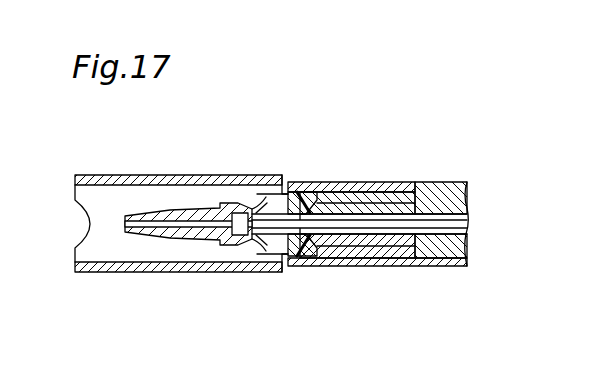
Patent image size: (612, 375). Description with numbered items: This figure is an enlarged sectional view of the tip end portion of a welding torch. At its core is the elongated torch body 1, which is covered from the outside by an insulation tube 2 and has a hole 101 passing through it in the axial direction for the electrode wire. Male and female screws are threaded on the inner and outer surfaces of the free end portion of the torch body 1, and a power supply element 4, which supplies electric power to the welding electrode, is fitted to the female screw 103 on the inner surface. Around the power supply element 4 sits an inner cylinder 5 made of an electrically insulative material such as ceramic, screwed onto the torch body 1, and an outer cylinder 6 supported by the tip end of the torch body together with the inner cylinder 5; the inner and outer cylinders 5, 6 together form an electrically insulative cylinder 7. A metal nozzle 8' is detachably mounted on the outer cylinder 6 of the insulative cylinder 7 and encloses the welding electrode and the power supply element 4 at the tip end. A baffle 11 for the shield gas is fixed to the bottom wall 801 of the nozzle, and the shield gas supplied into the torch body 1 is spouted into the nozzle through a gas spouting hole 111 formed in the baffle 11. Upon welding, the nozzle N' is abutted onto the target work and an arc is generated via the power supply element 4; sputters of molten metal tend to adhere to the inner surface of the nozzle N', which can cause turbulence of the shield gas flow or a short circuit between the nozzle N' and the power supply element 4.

The torch body 1 is at (423, 256).
The insulation tube 2 is at (352, 262).
The power supply element 4 is at (197, 238).
The inner cylinder 5 is at (363, 168).
The outer cylinder 6 is at (362, 182).
The electrically insulative cylinder 7 is at (378, 147).
The nozzle 8' is at (178, 250).
The baffle 11 is at (288, 252).
The hole 101 is at (207, 226).
The female screw 103 is at (387, 254).
The gas spouting hole 111 is at (254, 246).
The bottom wall 801 is at (247, 194).
The nozzle N' is at (81, 318).